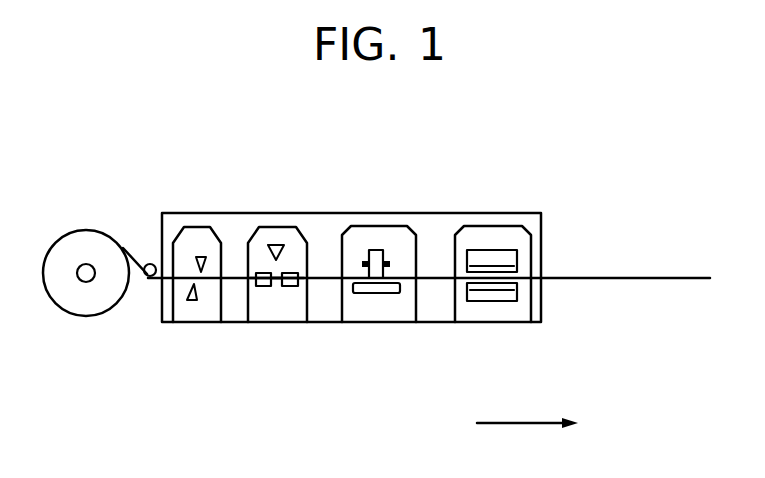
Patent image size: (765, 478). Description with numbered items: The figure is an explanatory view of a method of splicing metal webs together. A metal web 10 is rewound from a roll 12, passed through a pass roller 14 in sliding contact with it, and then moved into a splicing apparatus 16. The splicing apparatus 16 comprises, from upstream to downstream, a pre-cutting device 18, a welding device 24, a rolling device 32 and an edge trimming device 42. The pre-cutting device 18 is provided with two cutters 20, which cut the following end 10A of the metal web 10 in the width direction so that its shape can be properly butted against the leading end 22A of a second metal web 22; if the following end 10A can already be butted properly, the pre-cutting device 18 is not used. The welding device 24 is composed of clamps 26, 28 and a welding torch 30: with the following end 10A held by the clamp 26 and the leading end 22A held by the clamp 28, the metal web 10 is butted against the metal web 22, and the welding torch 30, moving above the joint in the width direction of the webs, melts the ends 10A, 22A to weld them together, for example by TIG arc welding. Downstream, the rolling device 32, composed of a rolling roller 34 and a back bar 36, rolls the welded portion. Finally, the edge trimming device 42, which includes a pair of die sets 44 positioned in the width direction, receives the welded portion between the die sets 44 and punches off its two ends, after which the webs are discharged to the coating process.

The metal web 10 is at (128, 246).
The following end of the metal web 10A is at (263, 286).
The roll 12 is at (85, 308).
The pass roller 14 is at (148, 280).
The splicing apparatus 16 is at (170, 212).
The pre-cutting device 18 is at (197, 227).
The cutters 20 is at (201, 257).
The metal web 22 is at (627, 270).
The leading end of the metal web 22A is at (291, 286).
The welding device 24 is at (272, 230).
The clamp 26 is at (253, 285).
The clamp 28 is at (298, 272).
The welding torch 30 is at (279, 243).
The rolling device 32 is at (370, 225).
The rolling roller 34 is at (386, 250).
The back bar 36 is at (393, 295).
The edge trimming device 42 is at (492, 224).
The die sets 44 is at (503, 254).